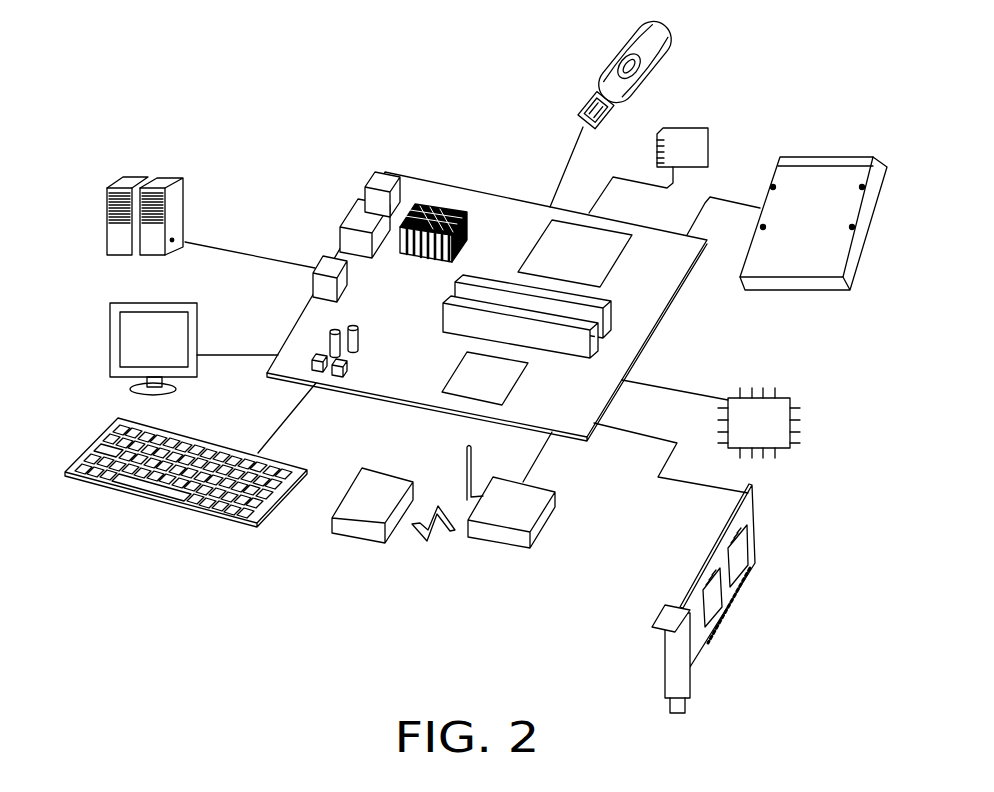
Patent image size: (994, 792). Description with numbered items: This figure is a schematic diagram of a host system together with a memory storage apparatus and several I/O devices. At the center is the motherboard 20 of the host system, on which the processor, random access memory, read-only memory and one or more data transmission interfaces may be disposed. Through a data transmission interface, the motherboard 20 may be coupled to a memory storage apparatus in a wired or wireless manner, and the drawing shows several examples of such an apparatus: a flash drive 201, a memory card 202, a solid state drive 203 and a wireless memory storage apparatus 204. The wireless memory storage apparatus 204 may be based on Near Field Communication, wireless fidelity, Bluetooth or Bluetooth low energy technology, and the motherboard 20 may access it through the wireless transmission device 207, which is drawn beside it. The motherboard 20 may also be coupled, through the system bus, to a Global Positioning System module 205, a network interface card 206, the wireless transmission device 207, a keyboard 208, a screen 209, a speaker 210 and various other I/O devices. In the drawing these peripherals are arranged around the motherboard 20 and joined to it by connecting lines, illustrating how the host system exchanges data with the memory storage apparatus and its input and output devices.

The motherboard 20 is at (490, 212).
The flash drive 201 is at (612, 62).
The memory card 202 is at (709, 136).
The solid state drive 203 is at (827, 155).
The wireless memory storage apparatus 204 is at (352, 481).
The Global Positioning System module 205 is at (797, 423).
The network interface card 206 is at (755, 545).
The wireless transmission device 207 is at (549, 527).
The keyboard 208 is at (190, 512).
The screen 209 is at (110, 357).
The speaker 210 is at (105, 242).